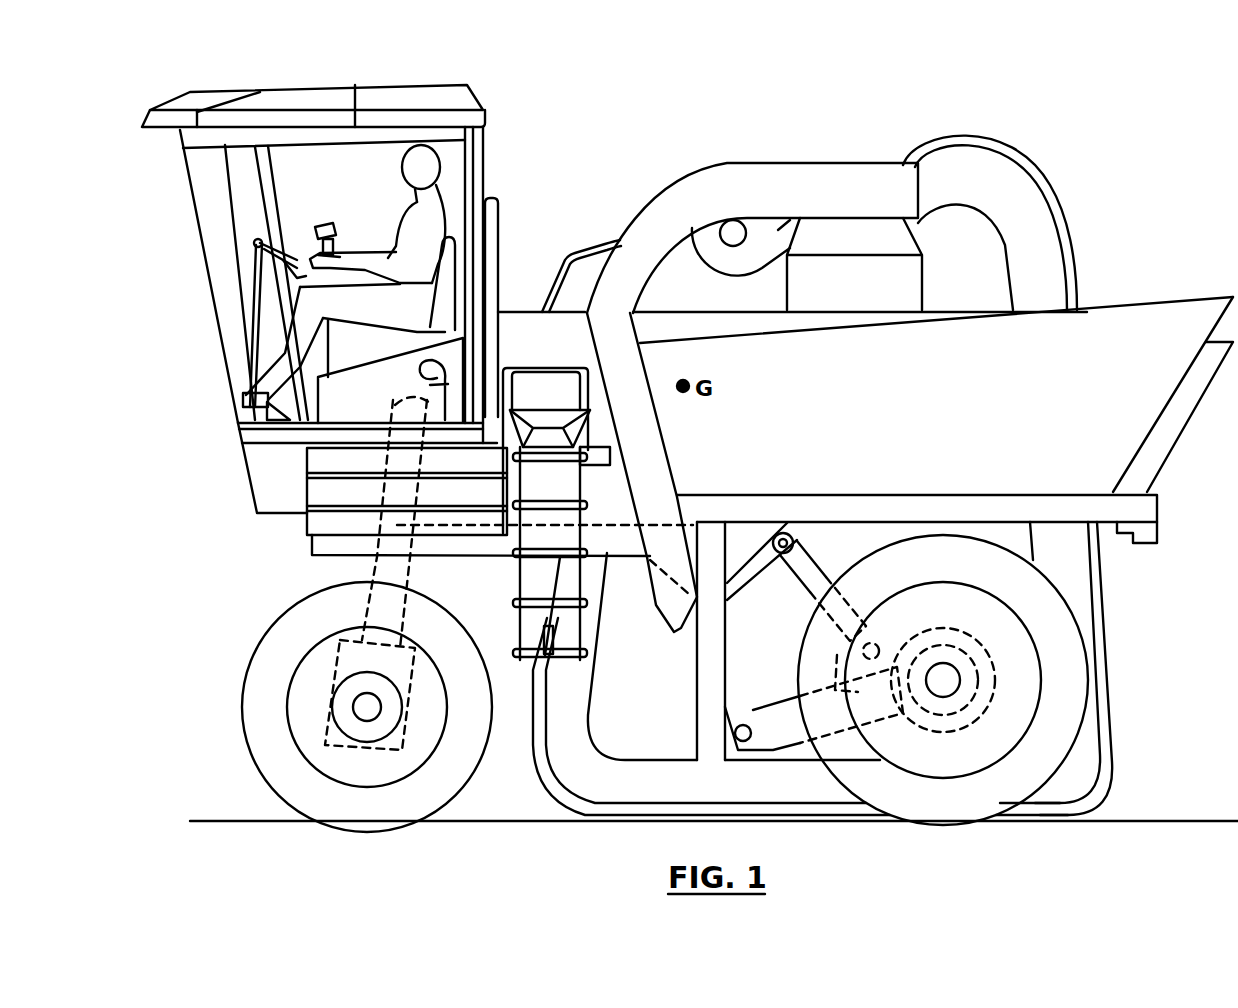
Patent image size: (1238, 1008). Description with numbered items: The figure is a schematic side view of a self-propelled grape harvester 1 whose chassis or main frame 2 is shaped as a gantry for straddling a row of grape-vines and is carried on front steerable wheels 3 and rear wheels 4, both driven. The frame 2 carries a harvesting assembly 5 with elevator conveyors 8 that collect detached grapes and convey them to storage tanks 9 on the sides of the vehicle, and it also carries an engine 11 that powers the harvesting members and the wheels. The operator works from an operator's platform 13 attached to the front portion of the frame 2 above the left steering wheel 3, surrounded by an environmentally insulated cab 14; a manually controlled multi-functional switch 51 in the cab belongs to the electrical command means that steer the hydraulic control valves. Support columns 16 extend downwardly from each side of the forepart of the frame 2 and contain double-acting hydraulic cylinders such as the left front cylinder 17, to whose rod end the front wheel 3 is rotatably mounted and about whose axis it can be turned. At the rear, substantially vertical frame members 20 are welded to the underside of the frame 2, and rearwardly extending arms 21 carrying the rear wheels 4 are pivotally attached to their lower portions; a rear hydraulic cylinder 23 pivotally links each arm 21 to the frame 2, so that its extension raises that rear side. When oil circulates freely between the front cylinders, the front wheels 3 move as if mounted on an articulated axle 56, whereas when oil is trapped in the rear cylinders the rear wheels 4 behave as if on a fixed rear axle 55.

The harvester 1 is at (894, 133).
The main frame 2 is at (1127, 542).
The front steerable wheels 3 is at (345, 707).
The rear wheels 4 is at (975, 680).
The harvesting assembly 5 is at (1148, 689).
The elevator conveyors 8 is at (1108, 643).
The storage tanks 9 is at (1127, 318).
The engine 11 is at (522, 293).
The operator's platform 13 is at (222, 490).
The cab 14 is at (217, 92).
The support columns 16 is at (373, 569).
The left front hydraulic cylinder 17 is at (400, 570).
The vertical frame members 20 is at (707, 683).
The rearwardly extending arms 21 is at (777, 713).
The rear left hydraulic cylinder 23 is at (802, 583).
The multi-functional switch 51 is at (335, 222).
The fixed rear axle 55 is at (943, 683).
The axle 56 is at (367, 707).